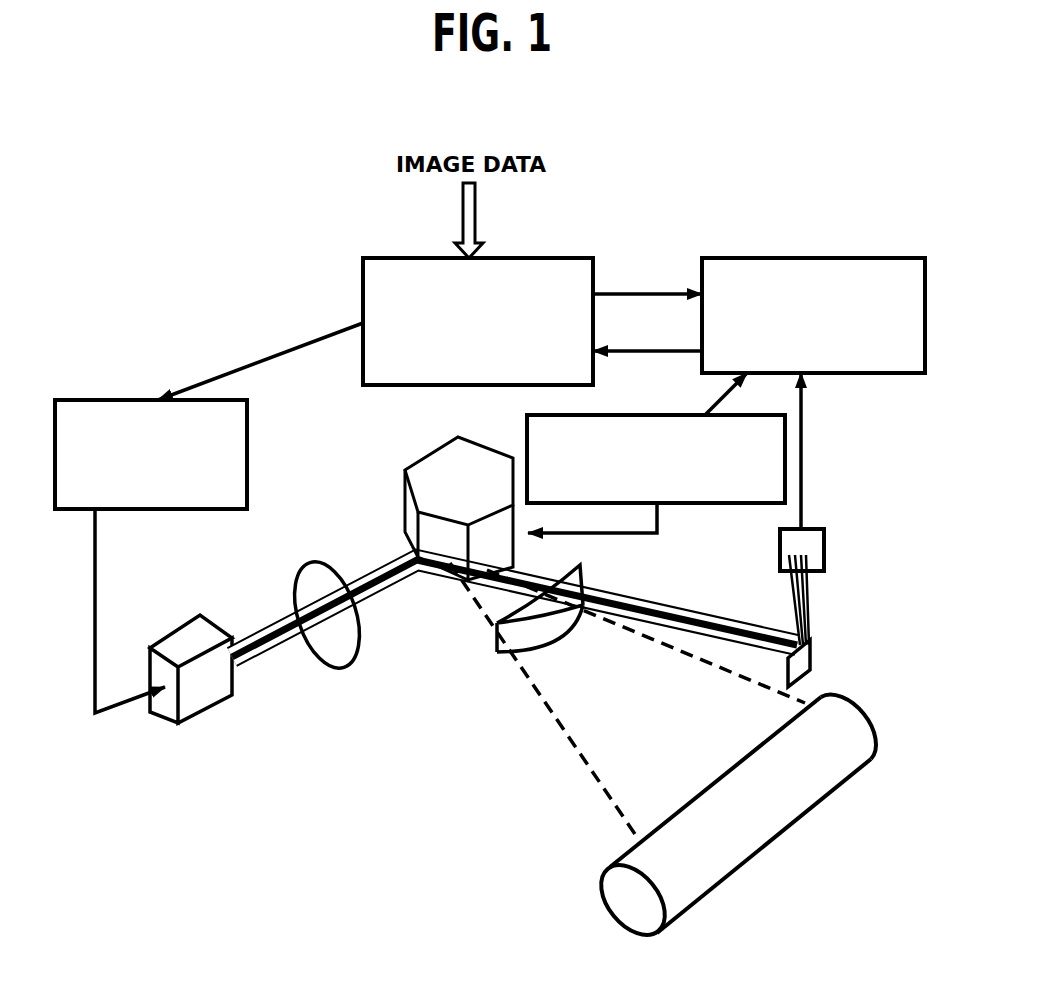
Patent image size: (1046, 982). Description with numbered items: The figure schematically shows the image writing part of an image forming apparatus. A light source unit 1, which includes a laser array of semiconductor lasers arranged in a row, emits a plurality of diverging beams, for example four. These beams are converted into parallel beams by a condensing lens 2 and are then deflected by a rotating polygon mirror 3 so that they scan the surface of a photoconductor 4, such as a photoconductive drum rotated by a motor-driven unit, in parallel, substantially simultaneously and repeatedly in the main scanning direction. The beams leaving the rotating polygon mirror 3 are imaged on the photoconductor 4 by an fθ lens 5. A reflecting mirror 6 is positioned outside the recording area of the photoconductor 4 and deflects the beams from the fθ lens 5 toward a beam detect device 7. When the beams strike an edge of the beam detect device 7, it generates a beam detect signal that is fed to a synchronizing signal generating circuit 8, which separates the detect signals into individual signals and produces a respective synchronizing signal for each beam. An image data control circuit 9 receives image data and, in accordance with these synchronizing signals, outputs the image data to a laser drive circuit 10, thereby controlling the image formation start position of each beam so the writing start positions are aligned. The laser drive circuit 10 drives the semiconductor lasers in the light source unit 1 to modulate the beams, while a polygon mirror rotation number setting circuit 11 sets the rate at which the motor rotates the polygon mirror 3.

The light source unit 1 is at (161, 718).
The condensing lens 2 is at (325, 657).
The rotating polygon mirror 3 is at (403, 503).
The photoconductor 4 is at (812, 800).
The fθ lens 5 is at (497, 640).
The reflecting mirror 6 is at (812, 653).
The beam detect device 7 is at (825, 538).
The synchronizing signal generating circuit 8 is at (872, 258).
The image data control circuit 9 is at (567, 258).
The laser drive circuit 10 is at (97, 400).
The polygon mirror rotation number setting circuit 11 is at (610, 414).